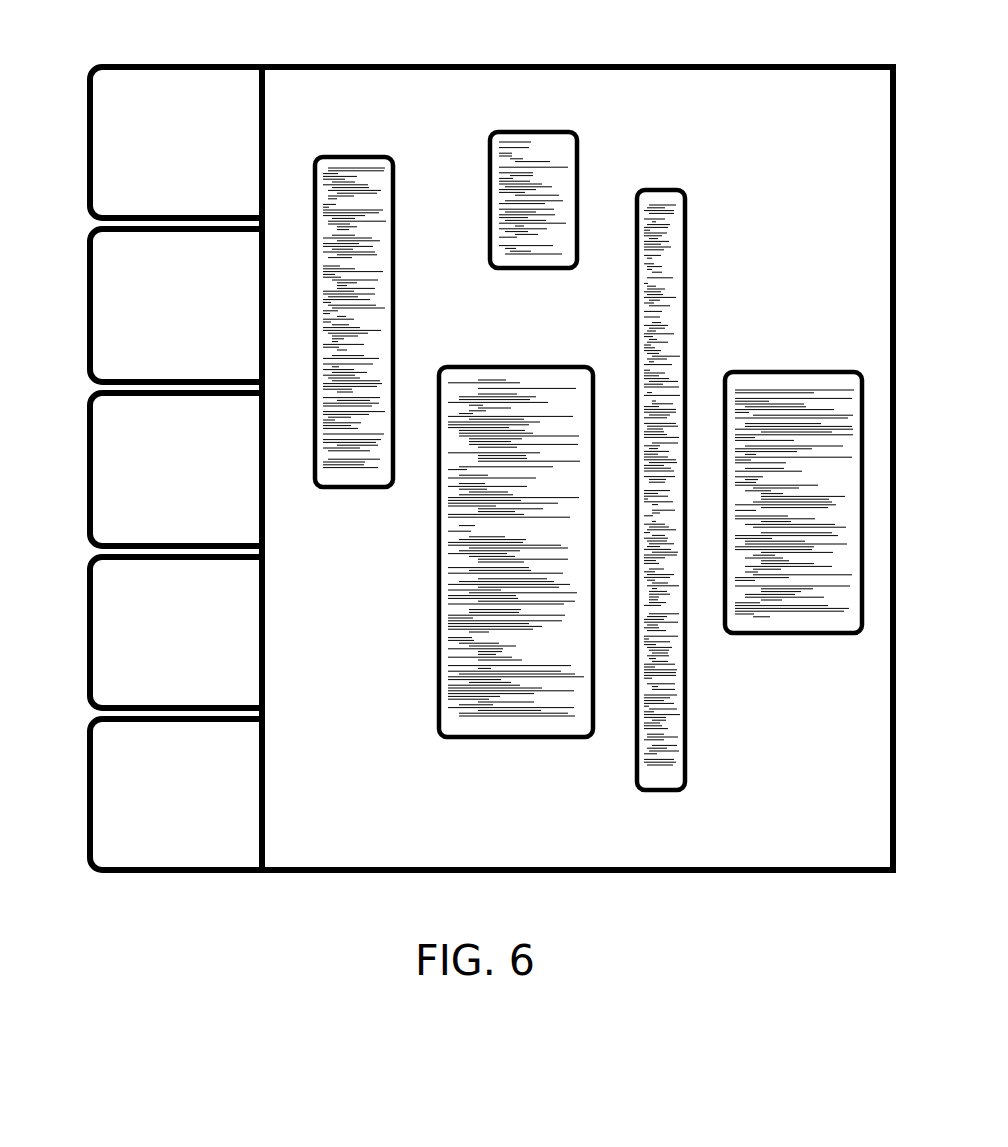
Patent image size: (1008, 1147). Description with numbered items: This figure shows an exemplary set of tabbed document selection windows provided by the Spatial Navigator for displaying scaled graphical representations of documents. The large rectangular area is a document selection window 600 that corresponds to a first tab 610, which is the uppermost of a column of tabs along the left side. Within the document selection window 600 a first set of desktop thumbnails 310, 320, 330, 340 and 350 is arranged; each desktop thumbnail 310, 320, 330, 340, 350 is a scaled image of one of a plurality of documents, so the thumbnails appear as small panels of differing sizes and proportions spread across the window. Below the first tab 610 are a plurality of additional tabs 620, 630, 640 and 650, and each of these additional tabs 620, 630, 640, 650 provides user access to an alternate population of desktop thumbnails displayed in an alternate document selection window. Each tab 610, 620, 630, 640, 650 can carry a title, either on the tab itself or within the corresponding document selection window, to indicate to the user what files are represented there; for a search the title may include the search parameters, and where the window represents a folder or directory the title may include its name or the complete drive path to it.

The document selection window 600 is at (707, 65).
The first tab 610 is at (136, 106).
The additional tab 620 is at (136, 264).
The additional tab 630 is at (136, 424).
The additional tab 640 is at (136, 589).
The additional tab 650 is at (136, 757).
The desktop thumbnail 310 is at (568, 130).
The desktop thumbnail 320 is at (358, 157).
The desktop thumbnail 330 is at (668, 190).
The desktop thumbnail 340 is at (497, 737).
The desktop thumbnail 350 is at (818, 633).